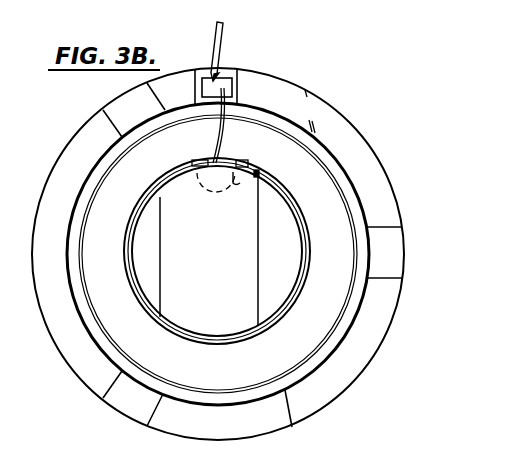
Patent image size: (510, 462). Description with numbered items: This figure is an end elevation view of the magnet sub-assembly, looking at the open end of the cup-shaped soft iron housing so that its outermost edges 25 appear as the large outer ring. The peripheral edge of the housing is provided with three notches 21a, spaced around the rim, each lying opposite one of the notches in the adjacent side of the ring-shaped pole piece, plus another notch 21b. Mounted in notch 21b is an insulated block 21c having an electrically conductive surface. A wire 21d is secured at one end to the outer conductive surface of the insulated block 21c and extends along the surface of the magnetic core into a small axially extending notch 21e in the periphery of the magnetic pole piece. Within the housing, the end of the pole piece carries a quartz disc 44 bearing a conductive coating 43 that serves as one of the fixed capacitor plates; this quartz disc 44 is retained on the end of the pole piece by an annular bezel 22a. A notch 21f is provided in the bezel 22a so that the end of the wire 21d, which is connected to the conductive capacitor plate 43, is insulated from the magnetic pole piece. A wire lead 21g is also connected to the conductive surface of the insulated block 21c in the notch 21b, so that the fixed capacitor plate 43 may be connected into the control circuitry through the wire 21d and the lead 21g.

The notch 21a is at (115, 110).
The notch 21b is at (228, 68).
The insulated block 21c is at (207, 72).
The wire 21d is at (220, 138).
The axially extending notch 21e is at (263, 170).
The notch 21f is at (187, 163).
The wire lead 21g is at (220, 40).
The annular bezel 22a is at (310, 250).
The outermost edges 25 is at (353, 147).
The conductive coating 43 is at (222, 248).
The quartz disc 44 is at (290, 300).